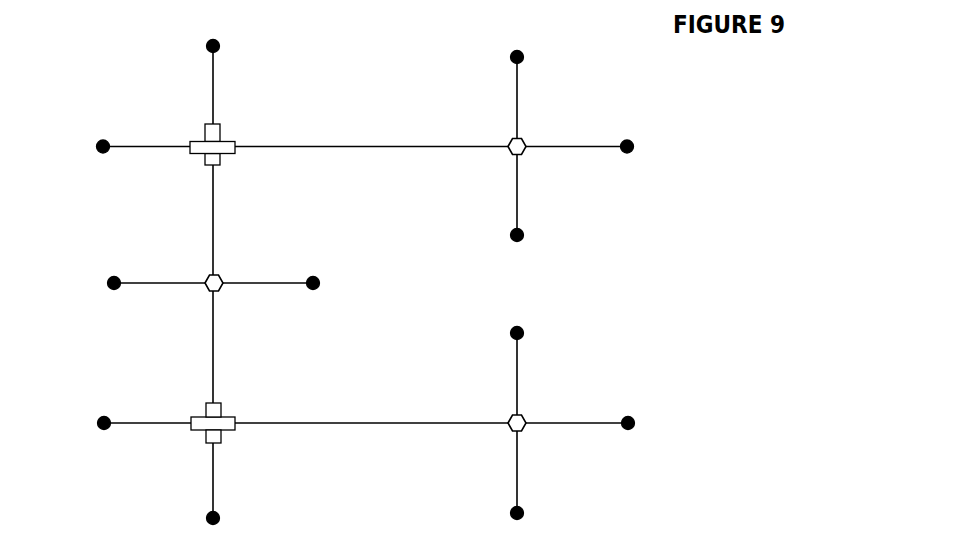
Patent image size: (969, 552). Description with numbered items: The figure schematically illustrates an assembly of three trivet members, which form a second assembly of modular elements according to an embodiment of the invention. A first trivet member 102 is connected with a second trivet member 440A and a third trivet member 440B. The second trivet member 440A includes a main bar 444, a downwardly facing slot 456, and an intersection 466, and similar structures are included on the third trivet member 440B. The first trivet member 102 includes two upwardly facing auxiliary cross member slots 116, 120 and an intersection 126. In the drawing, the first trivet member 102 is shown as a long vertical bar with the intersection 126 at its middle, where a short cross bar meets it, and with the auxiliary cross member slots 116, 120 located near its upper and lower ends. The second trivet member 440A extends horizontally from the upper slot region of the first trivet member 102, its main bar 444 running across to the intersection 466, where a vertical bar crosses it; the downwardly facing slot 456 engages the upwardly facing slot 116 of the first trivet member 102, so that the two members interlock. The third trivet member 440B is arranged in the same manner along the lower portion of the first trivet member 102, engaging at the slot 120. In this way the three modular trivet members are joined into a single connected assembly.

The first trivet member 102 is at (112, 212).
The main bar 444 is at (310, 140).
The upwardly facing auxiliary cross member slot 116 is at (218, 162).
The downwardly facing slot 456 is at (197, 143).
The second trivet member 440A is at (590, 176).
The intersection 466 is at (525, 139).
The third trivet member 440B is at (614, 364).
The intersection 126 is at (218, 290).
The upwardly facing auxiliary cross member slot 120 is at (222, 443).